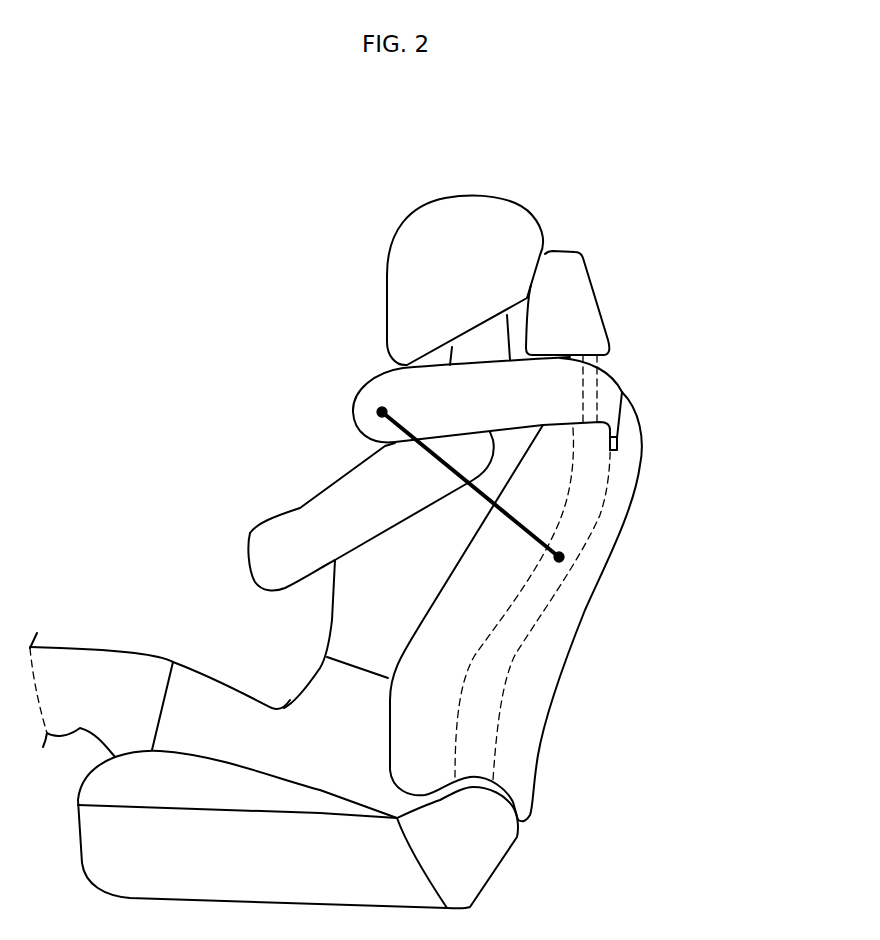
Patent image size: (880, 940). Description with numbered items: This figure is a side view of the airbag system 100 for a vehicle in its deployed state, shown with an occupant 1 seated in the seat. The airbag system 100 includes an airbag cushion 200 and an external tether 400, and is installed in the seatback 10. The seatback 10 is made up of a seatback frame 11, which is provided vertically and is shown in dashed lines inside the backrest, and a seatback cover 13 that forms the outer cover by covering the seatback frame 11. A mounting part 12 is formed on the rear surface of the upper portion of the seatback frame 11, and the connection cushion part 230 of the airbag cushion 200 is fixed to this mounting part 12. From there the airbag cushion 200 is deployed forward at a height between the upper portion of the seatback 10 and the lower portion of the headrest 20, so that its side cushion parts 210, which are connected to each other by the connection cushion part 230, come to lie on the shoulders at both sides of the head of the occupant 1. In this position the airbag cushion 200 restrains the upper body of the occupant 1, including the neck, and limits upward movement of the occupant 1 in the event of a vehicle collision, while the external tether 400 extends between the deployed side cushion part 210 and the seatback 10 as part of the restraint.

The airbag system 100 is at (96, 189).
The seatback 10 is at (725, 558).
The seatback frame 11 is at (562, 590).
The mounting part 12 is at (618, 443).
The seatback cover 13 is at (622, 533).
The headrest 20 is at (575, 290).
The airbag cushion 200 is at (272, 280).
The side cushion part 210 is at (362, 378).
The connection cushion part 230 is at (608, 387).
The external tether 400 is at (455, 462).
The occupant 1 is at (290, 540).